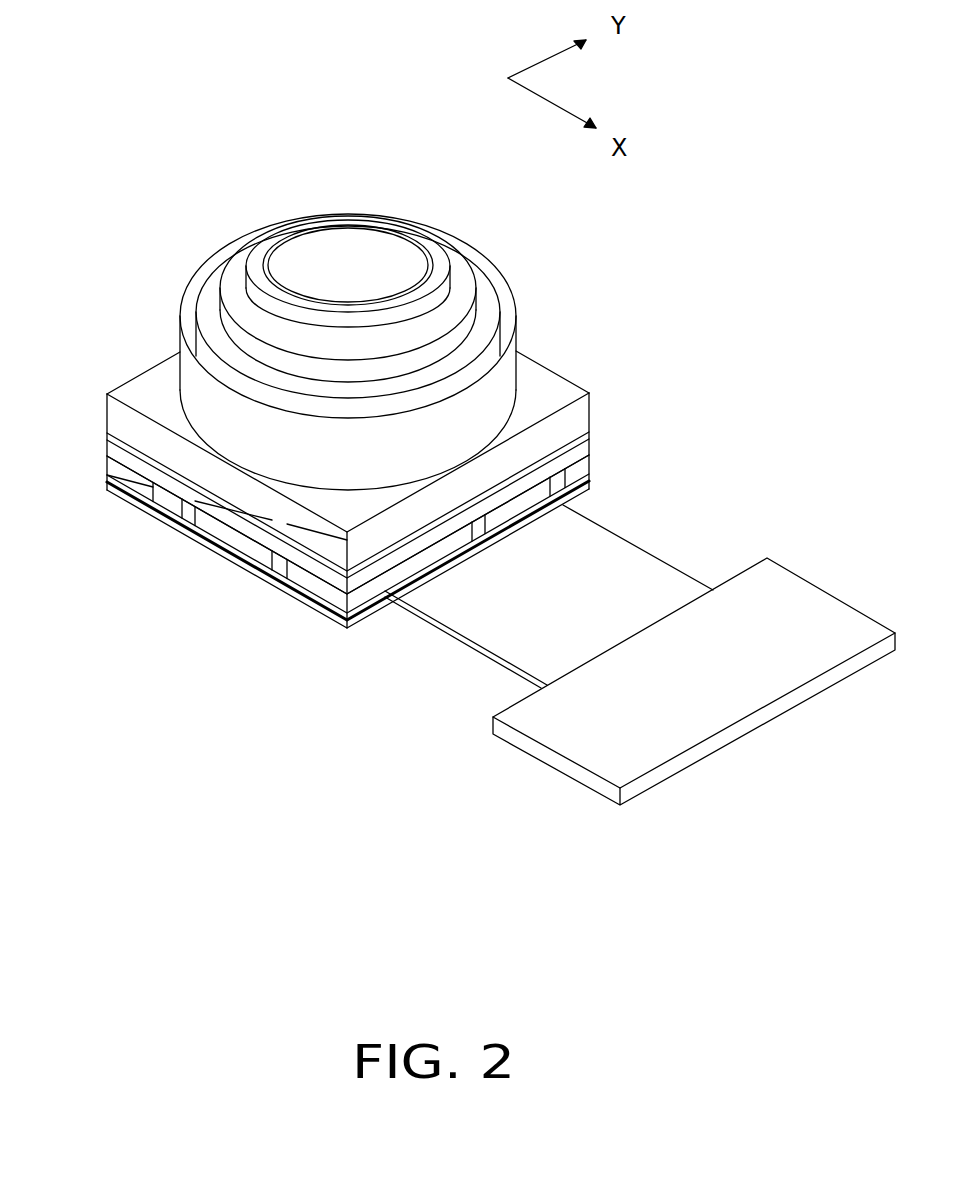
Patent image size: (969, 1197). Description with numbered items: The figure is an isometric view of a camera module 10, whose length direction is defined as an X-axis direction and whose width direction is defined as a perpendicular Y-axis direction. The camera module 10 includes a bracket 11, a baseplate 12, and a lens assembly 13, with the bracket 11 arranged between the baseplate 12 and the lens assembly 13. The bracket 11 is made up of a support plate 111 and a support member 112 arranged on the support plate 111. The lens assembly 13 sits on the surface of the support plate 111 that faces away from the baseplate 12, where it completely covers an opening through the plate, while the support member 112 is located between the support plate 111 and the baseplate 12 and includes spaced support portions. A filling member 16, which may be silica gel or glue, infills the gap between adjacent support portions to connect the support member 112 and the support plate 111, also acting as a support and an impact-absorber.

The camera module 10 is at (336, 132).
The bracket 11 is at (322, 498).
The support plate 111 is at (252, 530).
The support member 112 is at (193, 510).
The baseplate 12 is at (636, 532).
The lens assembly 13 is at (520, 337).
The filling member 16 is at (322, 524).